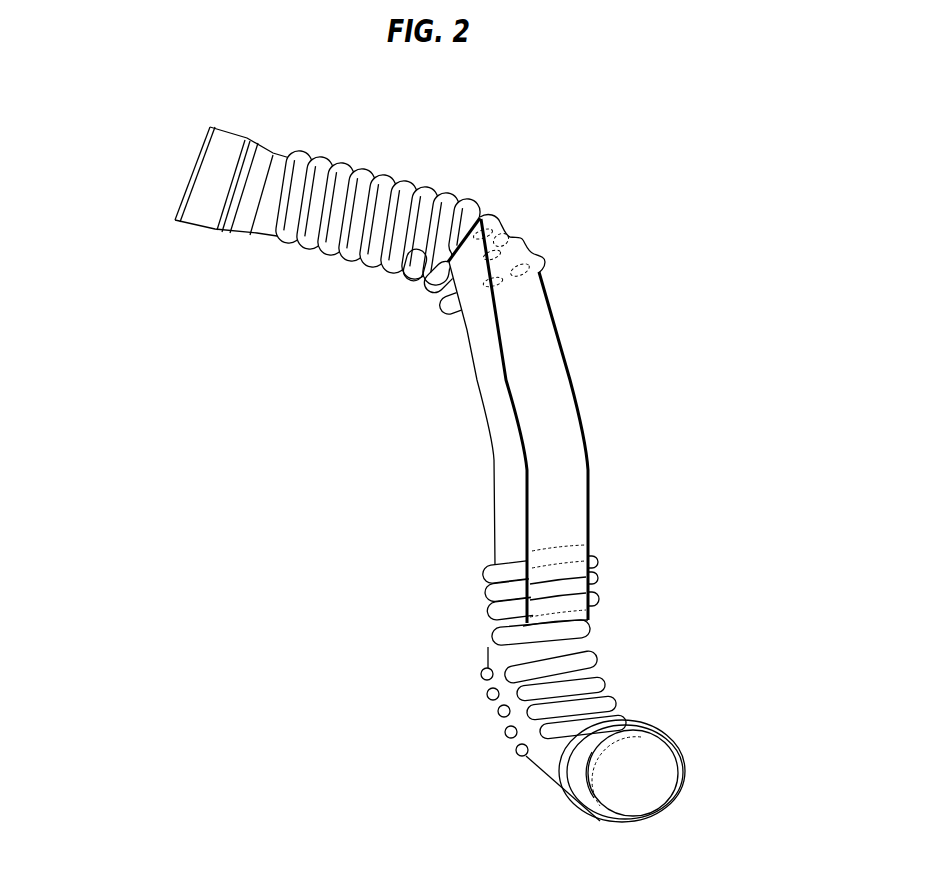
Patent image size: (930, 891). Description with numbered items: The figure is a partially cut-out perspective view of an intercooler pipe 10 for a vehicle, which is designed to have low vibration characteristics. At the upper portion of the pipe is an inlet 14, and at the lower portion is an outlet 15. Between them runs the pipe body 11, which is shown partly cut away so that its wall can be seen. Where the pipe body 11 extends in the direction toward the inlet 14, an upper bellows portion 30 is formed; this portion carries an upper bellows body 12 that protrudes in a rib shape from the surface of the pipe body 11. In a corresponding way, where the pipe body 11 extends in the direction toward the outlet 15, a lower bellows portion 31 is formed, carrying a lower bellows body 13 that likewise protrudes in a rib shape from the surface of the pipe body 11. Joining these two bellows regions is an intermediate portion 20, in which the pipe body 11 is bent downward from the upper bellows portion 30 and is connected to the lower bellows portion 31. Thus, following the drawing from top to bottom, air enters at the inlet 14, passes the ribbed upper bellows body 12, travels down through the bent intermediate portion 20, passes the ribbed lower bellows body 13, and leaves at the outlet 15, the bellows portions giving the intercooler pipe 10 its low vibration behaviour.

The intercooler pipe 10 is at (688, 147).
The pipe body 11 is at (502, 452).
The upper bellows body 12 is at (290, 243).
The lower bellows body 13 is at (488, 638).
The inlet 14 is at (208, 185).
The outlet 15 is at (653, 780).
The intermediate portion 20 is at (560, 273).
The upper bellows portion 30 is at (553, 238).
The lower bellows portion 31 is at (683, 732).